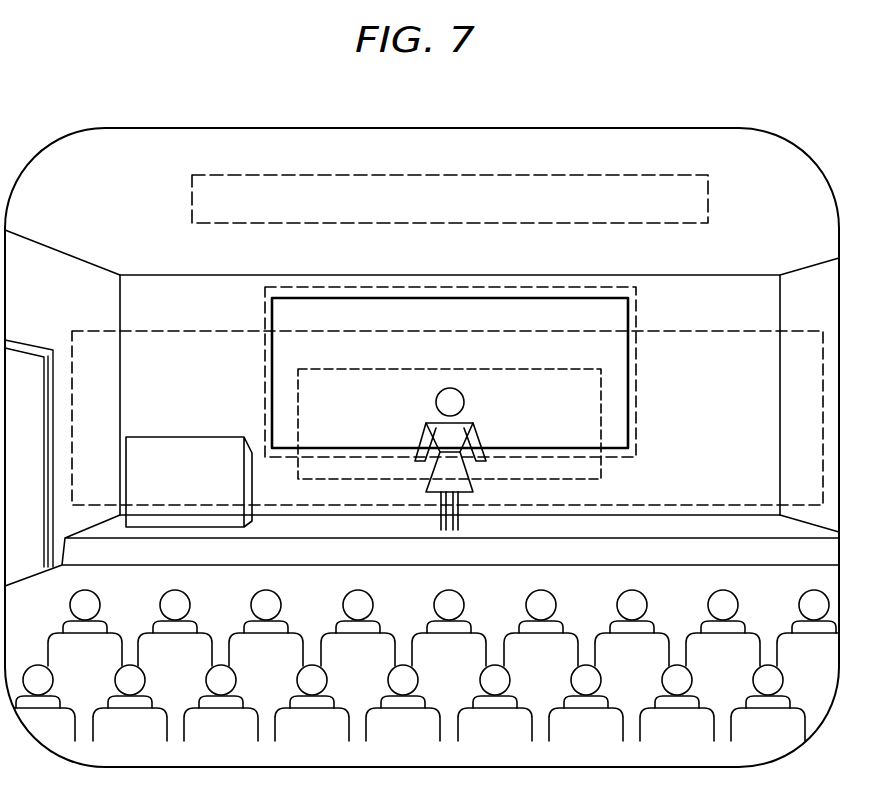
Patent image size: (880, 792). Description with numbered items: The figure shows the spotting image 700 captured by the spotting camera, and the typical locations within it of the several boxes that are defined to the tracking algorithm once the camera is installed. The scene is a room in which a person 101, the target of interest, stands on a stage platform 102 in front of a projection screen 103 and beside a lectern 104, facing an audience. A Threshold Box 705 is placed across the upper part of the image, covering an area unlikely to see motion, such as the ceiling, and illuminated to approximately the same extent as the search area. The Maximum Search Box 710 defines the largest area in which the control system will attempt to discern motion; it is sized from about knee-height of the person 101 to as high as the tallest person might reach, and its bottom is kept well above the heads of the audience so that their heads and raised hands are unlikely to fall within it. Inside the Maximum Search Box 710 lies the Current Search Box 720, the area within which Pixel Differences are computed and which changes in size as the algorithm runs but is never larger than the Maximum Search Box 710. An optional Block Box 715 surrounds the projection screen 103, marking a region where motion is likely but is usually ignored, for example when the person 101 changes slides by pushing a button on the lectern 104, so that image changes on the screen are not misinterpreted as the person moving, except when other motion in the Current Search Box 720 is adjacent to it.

The spotting image 700 is at (178, 94).
The Threshold Box 705 is at (590, 175).
The Maximum Search Box 710 is at (160, 330).
The Current Search Box 720 is at (350, 368).
The projection screen 103 is at (628, 375).
The Block Box 715 is at (637, 443).
The person 101 is at (420, 437).
The lectern 104 is at (199, 437).
The stage platform 102 is at (701, 530).